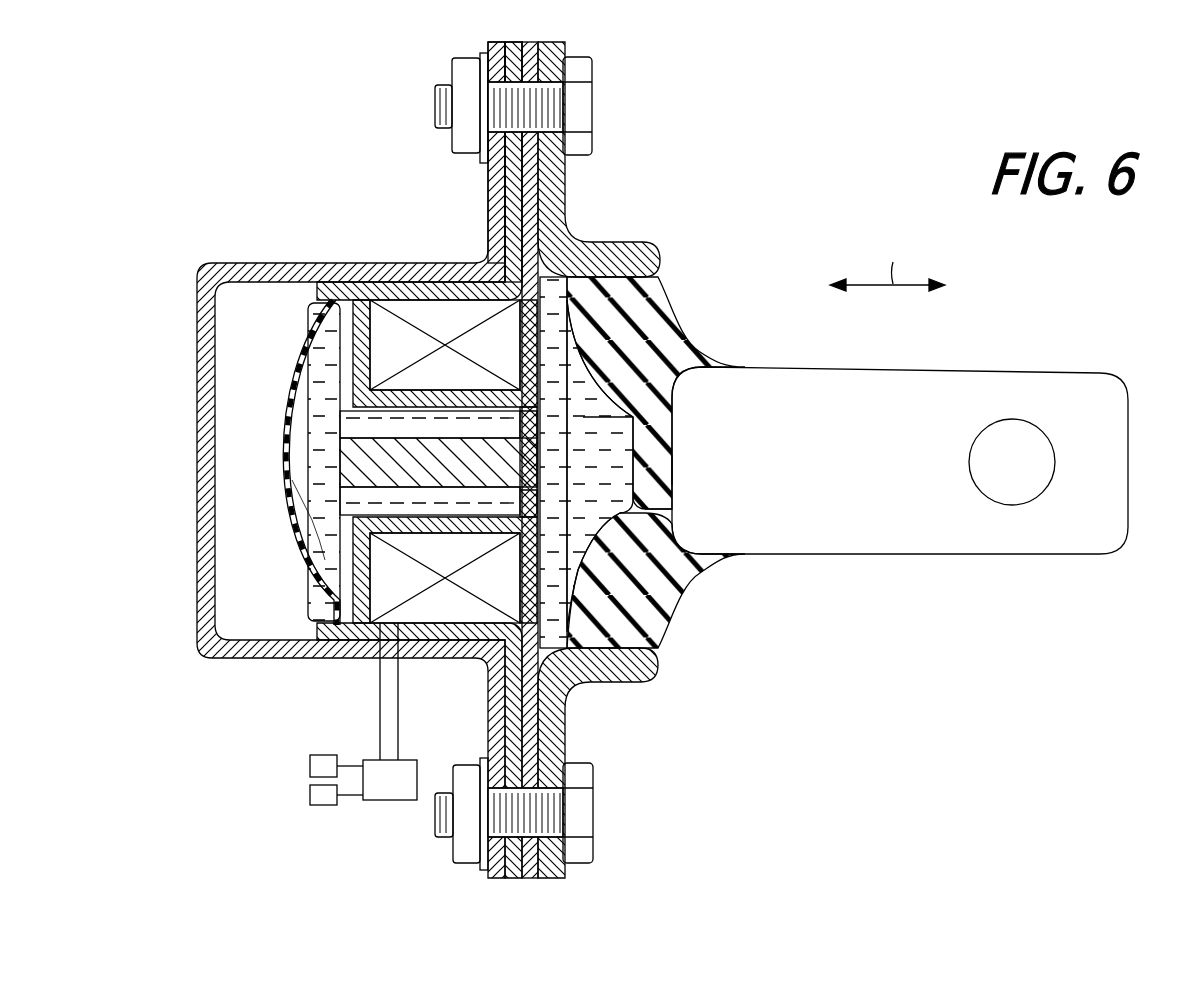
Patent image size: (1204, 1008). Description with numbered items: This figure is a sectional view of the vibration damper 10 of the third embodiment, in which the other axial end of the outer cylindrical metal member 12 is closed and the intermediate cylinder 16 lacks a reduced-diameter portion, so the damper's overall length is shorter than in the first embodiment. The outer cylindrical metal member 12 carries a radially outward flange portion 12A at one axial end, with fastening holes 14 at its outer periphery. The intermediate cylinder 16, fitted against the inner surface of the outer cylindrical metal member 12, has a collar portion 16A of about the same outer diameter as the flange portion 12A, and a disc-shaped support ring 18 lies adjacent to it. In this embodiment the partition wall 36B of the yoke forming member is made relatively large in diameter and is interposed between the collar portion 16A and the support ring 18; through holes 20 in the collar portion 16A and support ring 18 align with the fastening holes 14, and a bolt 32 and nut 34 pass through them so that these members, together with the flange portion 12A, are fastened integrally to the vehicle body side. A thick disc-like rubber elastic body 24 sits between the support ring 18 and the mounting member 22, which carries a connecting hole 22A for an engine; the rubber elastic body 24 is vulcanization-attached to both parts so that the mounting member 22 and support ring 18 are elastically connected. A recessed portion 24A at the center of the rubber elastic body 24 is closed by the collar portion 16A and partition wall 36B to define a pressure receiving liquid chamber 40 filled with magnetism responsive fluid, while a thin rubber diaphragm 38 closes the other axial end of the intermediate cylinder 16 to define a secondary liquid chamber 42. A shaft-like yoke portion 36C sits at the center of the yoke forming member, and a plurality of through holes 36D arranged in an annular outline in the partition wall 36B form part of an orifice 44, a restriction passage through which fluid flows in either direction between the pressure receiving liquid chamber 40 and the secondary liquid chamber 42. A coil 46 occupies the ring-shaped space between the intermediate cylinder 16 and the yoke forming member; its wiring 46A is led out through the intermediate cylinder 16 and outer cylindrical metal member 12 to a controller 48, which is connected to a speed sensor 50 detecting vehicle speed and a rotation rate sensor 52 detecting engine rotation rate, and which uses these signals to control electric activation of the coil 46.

The vibration damper 10 is at (670, 131).
The outer cylindrical metal member 12 is at (357, 265).
The flange portion 12A is at (492, 208).
The fastening hole 14 is at (475, 137).
The intermediate cylinder 16 is at (397, 282).
The collar portion 16A is at (502, 190).
The support ring 18 is at (566, 166).
The through hole 20 is at (582, 126).
The mounting member 22 is at (878, 369).
The connecting hole 22A is at (1008, 432).
The rubber elastic body 24 is at (693, 312).
The recessed portion 24A is at (645, 508).
The bolt 32 is at (576, 80).
The nut 34 is at (465, 70).
The partition wall 36B is at (567, 193).
The yoke portion 36C is at (332, 456).
The through holes 36D is at (540, 424).
The diaphragm 38 is at (304, 497).
The pressure receiving liquid chamber 40 is at (674, 472).
The secondary liquid chamber 42 is at (294, 470).
The orifice 44 is at (432, 415).
The coil 46 is at (430, 603).
The wiring 46A is at (378, 714).
The controller 48 is at (392, 802).
The speed sensor 50 is at (308, 766).
The rotation rate sensor 52 is at (308, 795).